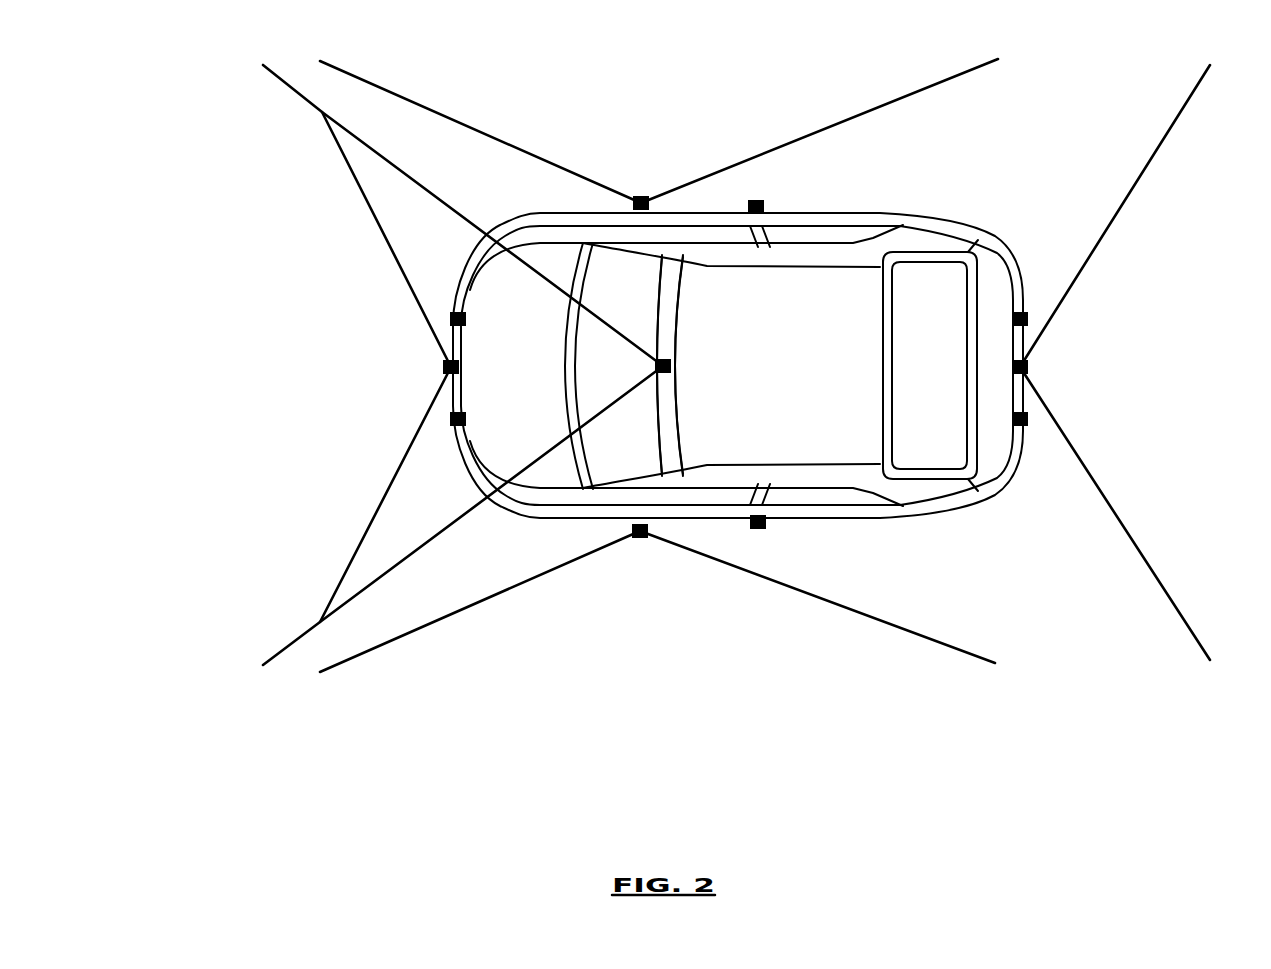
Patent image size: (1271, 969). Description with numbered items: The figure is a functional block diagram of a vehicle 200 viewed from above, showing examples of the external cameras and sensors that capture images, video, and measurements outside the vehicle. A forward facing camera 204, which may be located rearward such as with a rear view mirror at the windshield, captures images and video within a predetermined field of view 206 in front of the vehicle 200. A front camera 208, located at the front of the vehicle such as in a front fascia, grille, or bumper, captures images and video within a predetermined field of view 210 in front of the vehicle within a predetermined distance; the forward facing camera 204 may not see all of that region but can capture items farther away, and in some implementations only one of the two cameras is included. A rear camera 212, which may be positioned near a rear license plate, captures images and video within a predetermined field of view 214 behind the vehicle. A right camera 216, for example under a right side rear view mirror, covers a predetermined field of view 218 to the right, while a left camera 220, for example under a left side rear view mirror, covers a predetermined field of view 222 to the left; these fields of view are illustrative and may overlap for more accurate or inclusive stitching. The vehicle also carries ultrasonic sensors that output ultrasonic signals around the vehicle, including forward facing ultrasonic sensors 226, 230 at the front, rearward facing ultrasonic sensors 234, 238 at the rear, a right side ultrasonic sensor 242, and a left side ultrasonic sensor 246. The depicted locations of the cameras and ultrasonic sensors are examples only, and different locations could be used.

The vehicle 200 is at (175, 131).
The forward facing camera 204 is at (663, 366).
The field of view 206 is at (437, 195).
The front camera 208 is at (443, 367).
The field of view 210 is at (365, 200).
The rear camera 212 is at (1028, 367).
The field of view 214 is at (1125, 205).
The right camera 216 is at (641, 196).
The field of view 218 is at (408, 100).
The left camera 220 is at (640, 540).
The field of view 222 is at (772, 582).
The forward facing ultrasonic sensor 226 is at (450, 318).
The forward facing ultrasonic sensor 230 is at (450, 418).
The rearward facing ultrasonic sensor 234 is at (1028, 317).
The rearward facing ultrasonic sensor 238 is at (1028, 419).
The right side ultrasonic sensor 242 is at (756, 200).
The left side ultrasonic sensor 246 is at (758, 530).